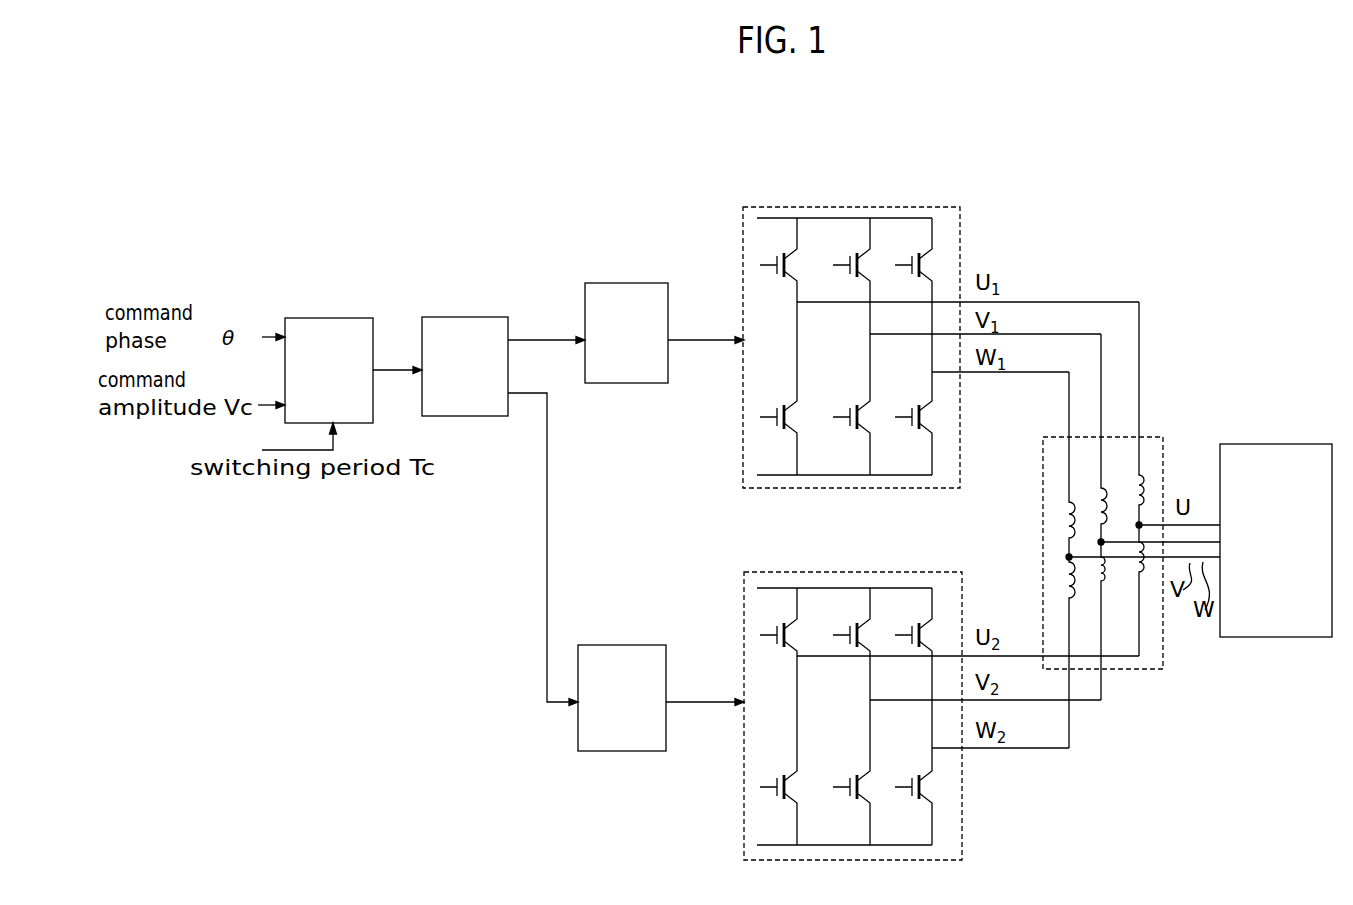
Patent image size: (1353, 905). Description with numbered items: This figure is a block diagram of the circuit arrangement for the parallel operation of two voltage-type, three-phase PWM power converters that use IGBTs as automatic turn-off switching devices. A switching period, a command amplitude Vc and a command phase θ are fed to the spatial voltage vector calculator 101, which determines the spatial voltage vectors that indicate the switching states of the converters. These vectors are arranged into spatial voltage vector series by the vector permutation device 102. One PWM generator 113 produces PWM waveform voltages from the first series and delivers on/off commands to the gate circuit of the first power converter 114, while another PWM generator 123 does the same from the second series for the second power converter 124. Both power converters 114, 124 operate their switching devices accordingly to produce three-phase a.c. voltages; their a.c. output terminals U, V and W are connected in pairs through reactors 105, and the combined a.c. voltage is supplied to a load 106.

The spatial voltage vector calculator 101 is at (317, 318).
The vector permutation device 102 is at (441, 317).
The PWM generator 113 is at (601, 283).
The first power converter 114 is at (764, 207).
The PWM generator 123 is at (595, 645).
The second power converter 124 is at (758, 572).
The reactors 105 is at (1130, 669).
The load 106 is at (1236, 460).